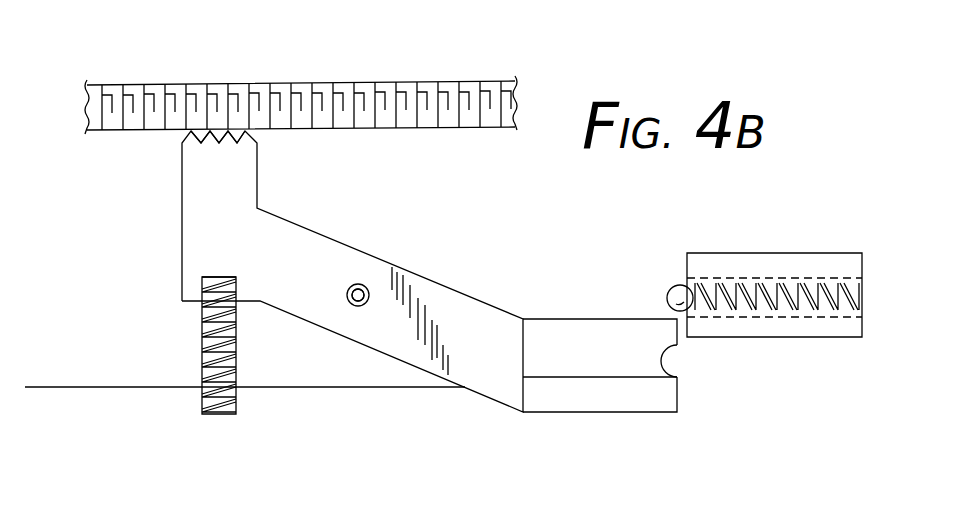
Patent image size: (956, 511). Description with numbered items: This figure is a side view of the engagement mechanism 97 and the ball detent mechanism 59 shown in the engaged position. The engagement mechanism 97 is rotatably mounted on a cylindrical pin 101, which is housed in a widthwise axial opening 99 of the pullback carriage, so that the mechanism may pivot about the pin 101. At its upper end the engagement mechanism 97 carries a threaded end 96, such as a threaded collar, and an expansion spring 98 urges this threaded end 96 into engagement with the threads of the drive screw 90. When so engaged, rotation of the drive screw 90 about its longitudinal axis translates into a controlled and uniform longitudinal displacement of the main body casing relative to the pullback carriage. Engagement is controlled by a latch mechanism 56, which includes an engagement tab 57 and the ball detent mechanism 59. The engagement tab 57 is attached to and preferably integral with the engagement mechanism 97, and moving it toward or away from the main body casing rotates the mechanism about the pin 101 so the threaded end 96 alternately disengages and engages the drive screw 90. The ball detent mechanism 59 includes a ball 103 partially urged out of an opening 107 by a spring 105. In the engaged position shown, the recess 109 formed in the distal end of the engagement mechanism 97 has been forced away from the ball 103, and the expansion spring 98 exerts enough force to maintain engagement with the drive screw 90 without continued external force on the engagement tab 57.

The latch mechanism 56 is at (626, 285).
The engagement tab 57 is at (632, 402).
The ball detent mechanism 59 is at (788, 262).
The drive screw 90 is at (300, 95).
The threaded end 96 is at (213, 130).
The engagement mechanism 97 is at (460, 306).
The expansion spring 98 is at (208, 329).
The widthwise axial opening 99 is at (348, 291).
The cylindrical pin 101 is at (361, 287).
The ball 103 is at (678, 290).
The spring 105 is at (790, 306).
The opening 107 is at (706, 284).
The recess 109 is at (677, 362).